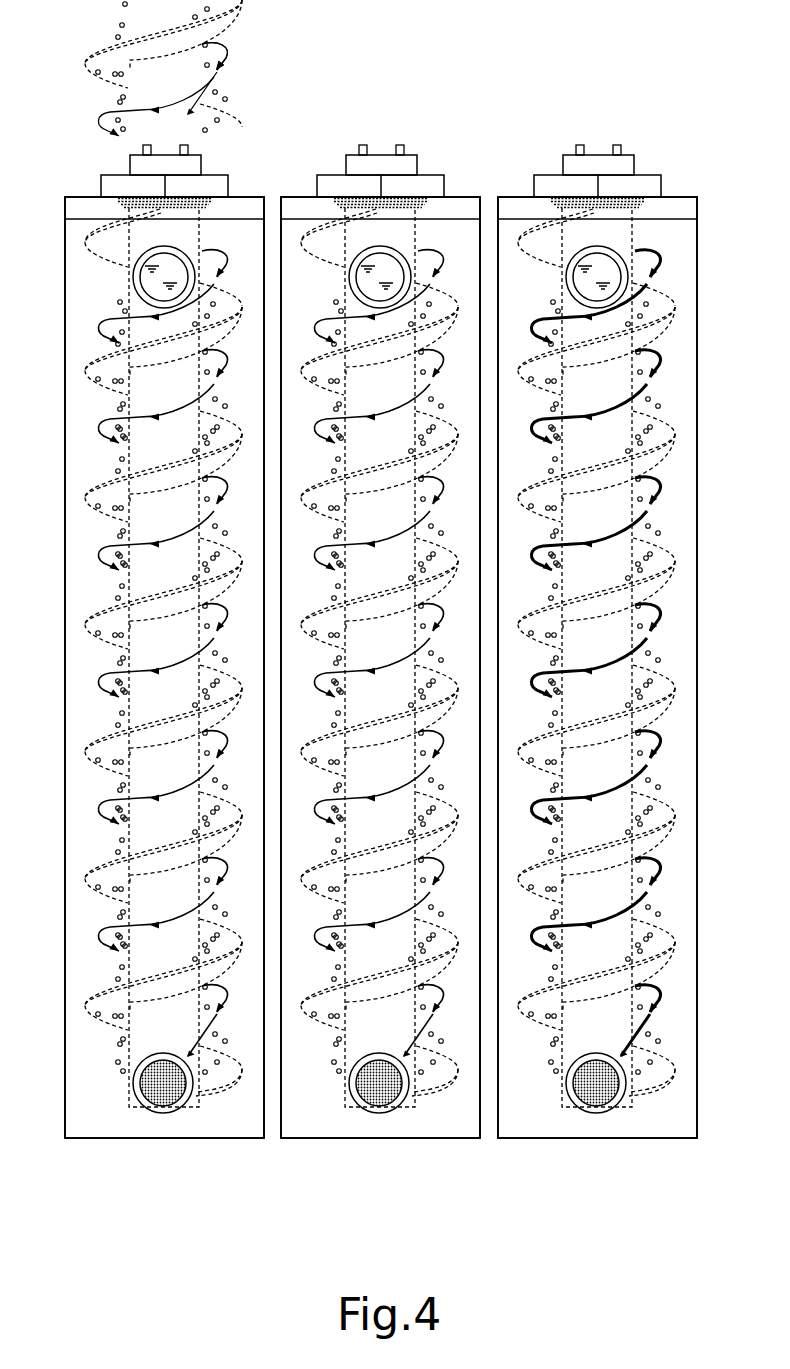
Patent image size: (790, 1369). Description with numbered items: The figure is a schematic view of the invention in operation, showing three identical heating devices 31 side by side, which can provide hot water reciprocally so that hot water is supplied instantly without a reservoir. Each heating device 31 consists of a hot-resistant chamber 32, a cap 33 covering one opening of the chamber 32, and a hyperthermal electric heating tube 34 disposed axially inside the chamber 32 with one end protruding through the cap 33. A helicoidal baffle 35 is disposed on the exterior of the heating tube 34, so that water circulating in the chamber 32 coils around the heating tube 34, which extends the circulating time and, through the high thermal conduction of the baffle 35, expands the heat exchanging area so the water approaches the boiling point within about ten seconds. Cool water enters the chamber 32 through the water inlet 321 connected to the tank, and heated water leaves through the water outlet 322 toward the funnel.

The heating device 31 is at (188, 103).
The hot-resistant chamber 32 is at (93, 1127).
The cap 33 is at (88, 210).
The hyperthermal electric heating tube 34 is at (123, 183).
The water inlet 321 is at (172, 260).
The water outlet 322 is at (152, 1104).
The helicoidal baffle 35 is at (223, 1077).